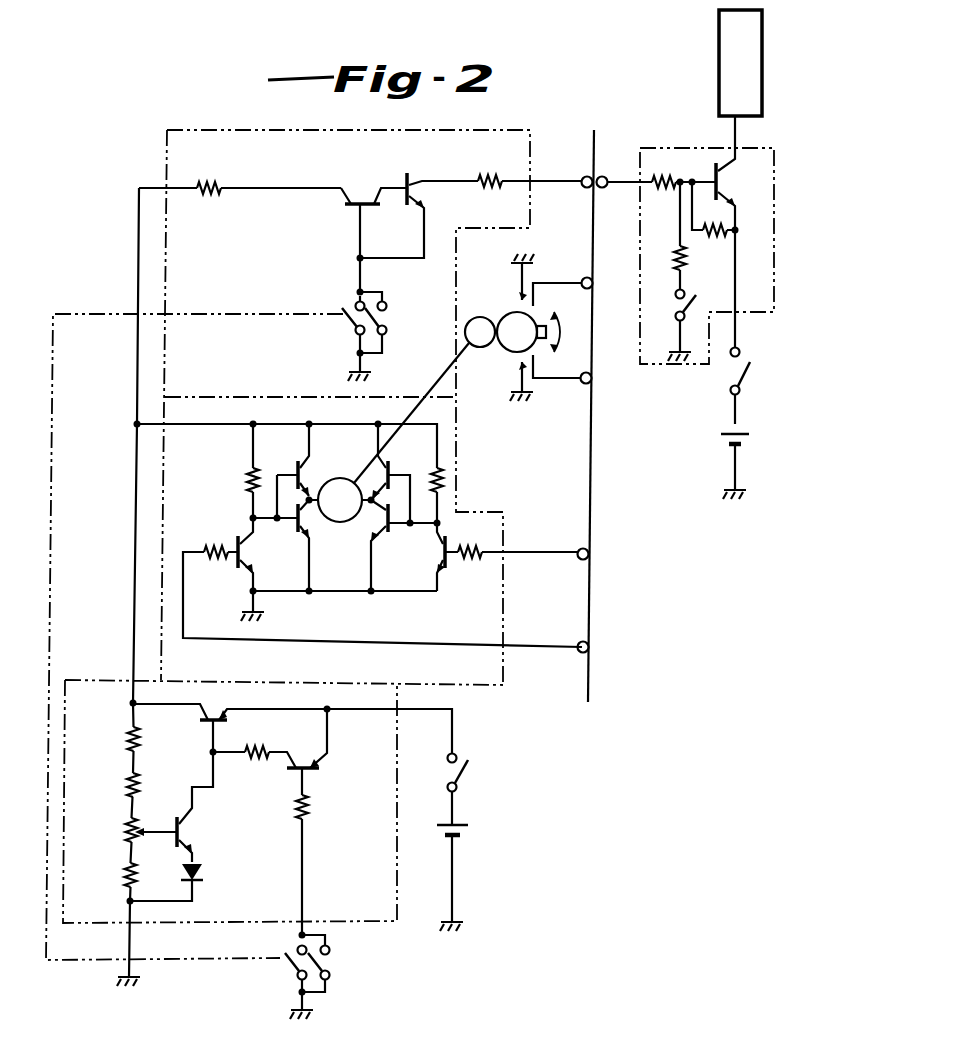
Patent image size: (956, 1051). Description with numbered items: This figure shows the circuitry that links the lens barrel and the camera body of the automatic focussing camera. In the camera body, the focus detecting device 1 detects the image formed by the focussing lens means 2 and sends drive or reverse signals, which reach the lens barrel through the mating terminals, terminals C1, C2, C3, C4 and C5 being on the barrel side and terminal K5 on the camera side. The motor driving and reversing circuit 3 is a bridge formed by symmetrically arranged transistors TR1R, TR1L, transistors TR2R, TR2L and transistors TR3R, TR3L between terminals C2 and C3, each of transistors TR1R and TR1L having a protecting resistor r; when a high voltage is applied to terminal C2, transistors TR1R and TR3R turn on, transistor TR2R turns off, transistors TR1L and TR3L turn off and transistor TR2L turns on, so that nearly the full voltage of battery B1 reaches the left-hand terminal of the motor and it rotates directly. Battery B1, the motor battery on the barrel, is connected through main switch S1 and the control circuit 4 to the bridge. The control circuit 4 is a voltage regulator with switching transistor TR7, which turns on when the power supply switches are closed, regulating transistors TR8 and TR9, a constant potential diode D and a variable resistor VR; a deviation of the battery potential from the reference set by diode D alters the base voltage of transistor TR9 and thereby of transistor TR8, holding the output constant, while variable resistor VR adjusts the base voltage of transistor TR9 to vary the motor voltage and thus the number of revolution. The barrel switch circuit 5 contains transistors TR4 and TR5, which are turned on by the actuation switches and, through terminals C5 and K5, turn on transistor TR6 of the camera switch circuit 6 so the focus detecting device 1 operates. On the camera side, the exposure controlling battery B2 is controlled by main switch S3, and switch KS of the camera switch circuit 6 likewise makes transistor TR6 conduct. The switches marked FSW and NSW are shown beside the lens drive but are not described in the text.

The focus detecting device 1 is at (762, 45).
The focussing lens means 2 is at (505, 353).
The motor driving and reversing circuit 3 is at (343, 534).
The control circuit 4 is at (190, 819).
The barrel switch circuit 5 is at (343, 267).
The camera switch circuit 6 is at (739, 185).
The transistor TR4 is at (358, 194).
The transistor TR5 is at (407, 178).
The transistor TR6 is at (722, 186).
The switching transistor TR7 is at (308, 772).
The regulating transistor TR8 is at (230, 723).
The regulating transistor TR9 is at (188, 834).
The transistor TR1L is at (382, 580).
The transistor TR1R is at (449, 554).
The transistor TR2L is at (308, 478).
The transistor TR2R is at (396, 480).
The transistor TR3L is at (310, 532).
The transistor TR3R is at (396, 528).
The protecting resistor r is at (230, 534).
The terminal C1 is at (593, 285).
The terminal C2 is at (589, 556).
The terminal C3 is at (589, 649).
The terminal C4 is at (592, 380).
The terminal C5 is at (583, 178).
The terminal K5 is at (616, 170).
The far-end switch FSW is at (546, 282).
The near-end switch NSW is at (545, 378).
The main switch S1 is at (449, 775).
The main switch S3 is at (746, 378).
The switch KS is at (690, 310).
The battery B1 is at (443, 836).
The exposure controlling battery B2 is at (746, 450).
The variable resistor VR is at (125, 835).
The constant potential diode D is at (200, 873).